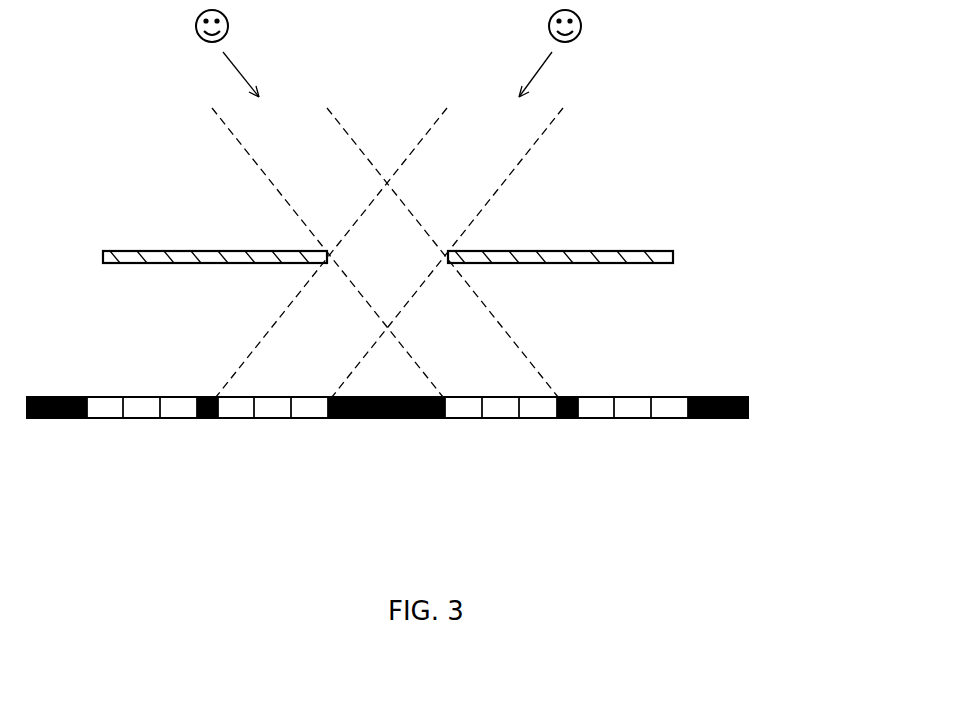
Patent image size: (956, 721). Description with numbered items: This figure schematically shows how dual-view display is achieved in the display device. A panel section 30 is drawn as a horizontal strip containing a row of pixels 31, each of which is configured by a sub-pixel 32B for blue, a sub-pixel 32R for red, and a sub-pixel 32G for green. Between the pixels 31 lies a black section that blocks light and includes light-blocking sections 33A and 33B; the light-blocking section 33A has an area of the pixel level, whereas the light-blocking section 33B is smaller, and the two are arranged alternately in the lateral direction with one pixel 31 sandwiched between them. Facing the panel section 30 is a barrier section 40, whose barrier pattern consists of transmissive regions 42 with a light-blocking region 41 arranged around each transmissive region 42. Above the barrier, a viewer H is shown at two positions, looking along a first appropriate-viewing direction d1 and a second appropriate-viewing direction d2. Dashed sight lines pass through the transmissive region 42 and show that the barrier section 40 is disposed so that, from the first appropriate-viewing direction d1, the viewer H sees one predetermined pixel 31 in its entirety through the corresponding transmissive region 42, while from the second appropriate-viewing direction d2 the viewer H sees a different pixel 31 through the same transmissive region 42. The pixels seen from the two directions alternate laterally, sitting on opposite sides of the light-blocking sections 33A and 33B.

The viewer H is at (195, 25).
The first appropriate-viewing direction d1 is at (540, 68).
The second appropriate-viewing direction d2 is at (237, 68).
The panel section 30 is at (436, 482).
The pixel 31 is at (387, 482).
The sub-pixel for blue 32B is at (108, 419).
The sub-pixel for red 32R is at (145, 419).
The sub-pixel for green 32G is at (425, 459).
The light-blocking section 33A is at (57, 419).
The light-blocking section 33B is at (212, 419).
The barrier section 40 is at (436, 230).
The light-blocking region 41 is at (174, 258).
The transmissive region 42 is at (408, 263).